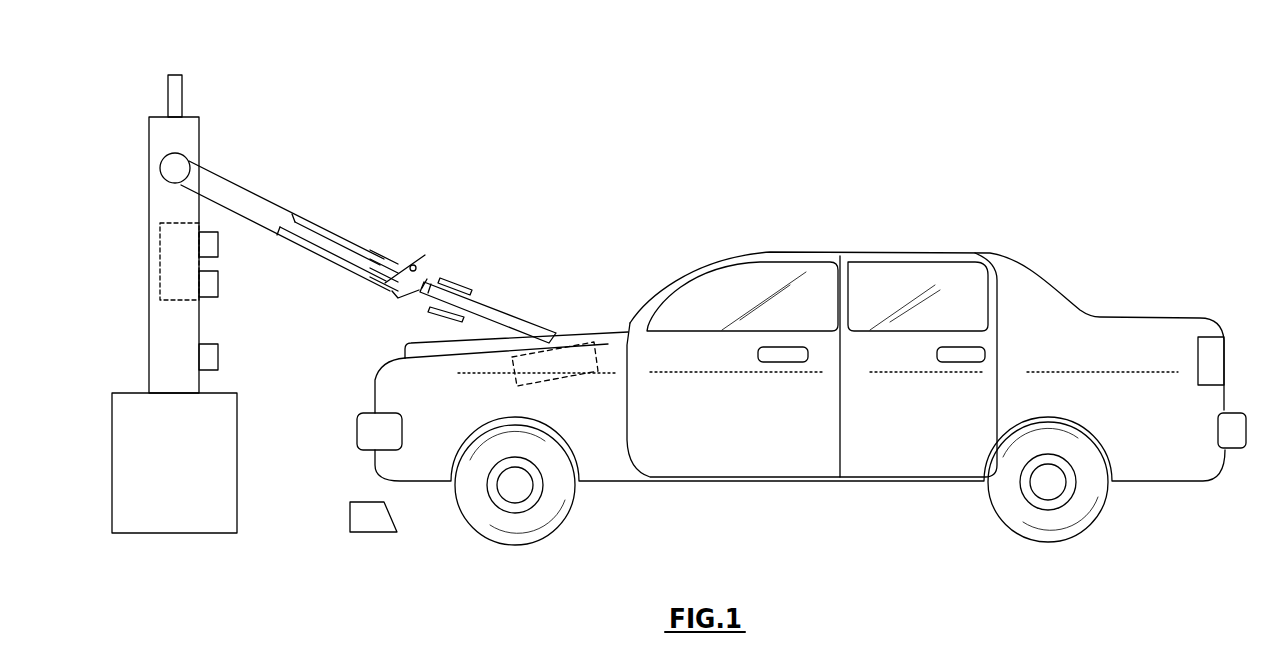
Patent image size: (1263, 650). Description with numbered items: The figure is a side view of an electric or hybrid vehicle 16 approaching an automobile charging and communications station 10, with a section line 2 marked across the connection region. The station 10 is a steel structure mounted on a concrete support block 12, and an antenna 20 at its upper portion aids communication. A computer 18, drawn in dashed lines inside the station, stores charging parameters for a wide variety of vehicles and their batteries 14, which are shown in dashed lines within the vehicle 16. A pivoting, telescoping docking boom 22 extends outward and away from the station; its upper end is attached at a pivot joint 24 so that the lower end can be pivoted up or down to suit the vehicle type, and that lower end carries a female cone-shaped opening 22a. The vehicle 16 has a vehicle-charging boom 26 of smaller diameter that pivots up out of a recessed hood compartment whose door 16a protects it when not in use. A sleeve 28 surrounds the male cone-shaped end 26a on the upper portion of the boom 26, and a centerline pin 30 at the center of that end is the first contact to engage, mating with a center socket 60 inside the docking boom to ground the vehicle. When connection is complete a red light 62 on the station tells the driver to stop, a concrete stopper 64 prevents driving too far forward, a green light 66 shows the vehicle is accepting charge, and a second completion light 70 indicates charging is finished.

The automobile charging and communications station 10 is at (105, 131).
The concrete support block 12 is at (112, 460).
The batteries 14 is at (606, 345).
The vehicle 16 is at (856, 252).
The door 16a is at (570, 333).
The computer 18 is at (155, 263).
The antenna 20 is at (182, 95).
The docking boom 22 is at (247, 193).
The female cone-shaped opening 22a is at (400, 280).
The pivot joint 24 is at (177, 162).
The vehicle-charging boom 26 is at (496, 300).
The male cone-shaped end 26a is at (431, 284).
The sleeve 28 is at (471, 297).
The centerline pin 30 is at (412, 300).
The center socket 60 is at (388, 262).
The red light 62 is at (218, 245).
The concrete stopper 64 is at (375, 534).
The green light 66 is at (218, 290).
The second completion light 70 is at (218, 360).
The section line 2- 2 is at (440, 257).